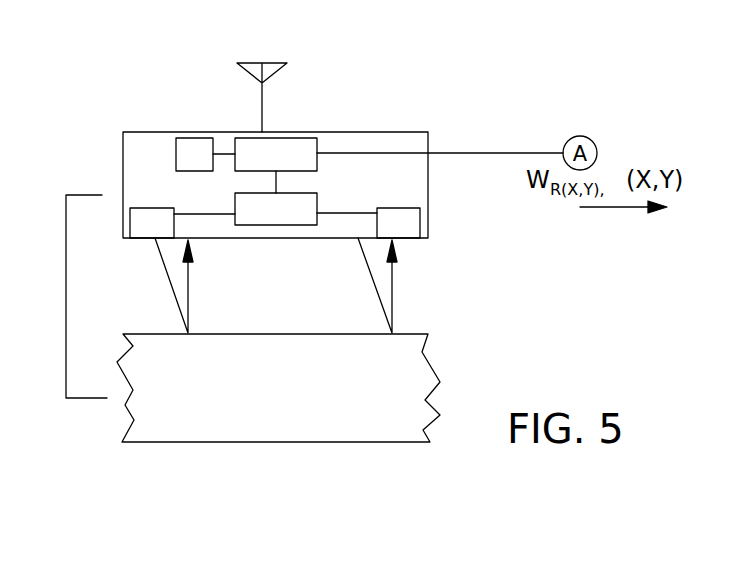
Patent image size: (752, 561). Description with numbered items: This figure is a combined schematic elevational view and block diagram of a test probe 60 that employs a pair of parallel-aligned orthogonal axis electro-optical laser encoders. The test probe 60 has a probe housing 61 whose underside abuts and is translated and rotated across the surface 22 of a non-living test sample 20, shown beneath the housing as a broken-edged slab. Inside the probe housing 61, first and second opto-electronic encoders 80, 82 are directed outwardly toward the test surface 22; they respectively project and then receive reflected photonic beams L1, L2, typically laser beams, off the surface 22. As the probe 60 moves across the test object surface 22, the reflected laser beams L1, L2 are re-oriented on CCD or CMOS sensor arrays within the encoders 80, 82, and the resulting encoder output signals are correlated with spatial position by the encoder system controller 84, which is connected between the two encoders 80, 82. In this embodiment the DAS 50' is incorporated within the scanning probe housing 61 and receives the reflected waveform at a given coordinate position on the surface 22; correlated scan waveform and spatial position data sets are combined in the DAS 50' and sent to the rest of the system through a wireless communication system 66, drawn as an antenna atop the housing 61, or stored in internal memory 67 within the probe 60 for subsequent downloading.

The non-living test sample 20 is at (348, 452).
The surface of the test sample 22 is at (418, 334).
The DAS 50' is at (399, 118).
The test probe 60 is at (426, 118).
The probe housing 61 is at (122, 143).
The wireless communication system 66 is at (262, 103).
The internal memory 67 is at (196, 147).
The first opto-electronic encoder 80 is at (143, 217).
The second opto-electronic encoder 82 is at (410, 218).
The encoder system controller 84 is at (274, 223).
The photonic beam L1 is at (170, 282).
The photonic beam L2 is at (392, 287).